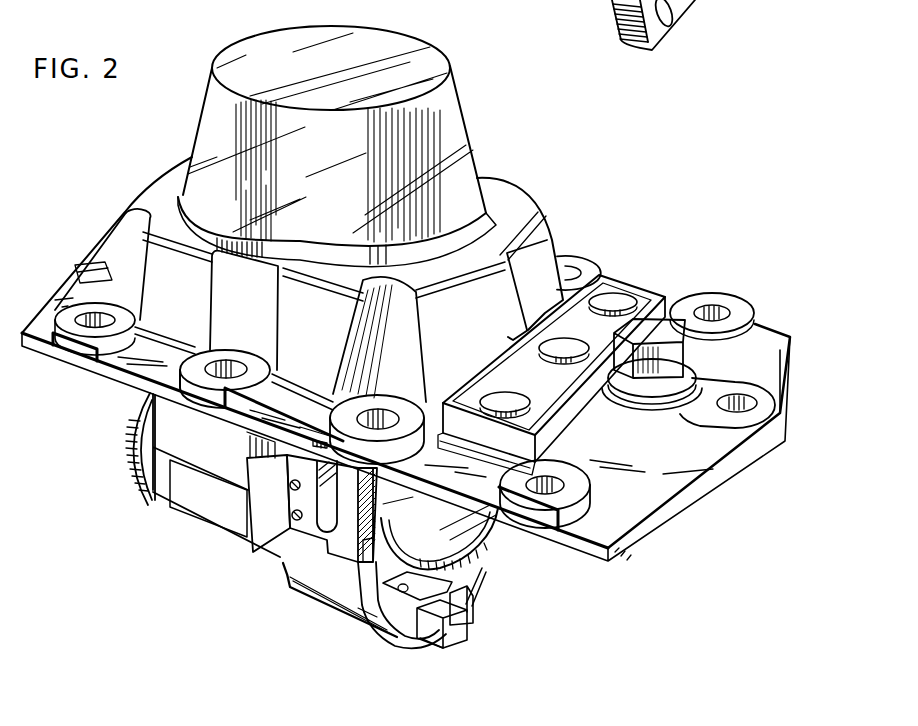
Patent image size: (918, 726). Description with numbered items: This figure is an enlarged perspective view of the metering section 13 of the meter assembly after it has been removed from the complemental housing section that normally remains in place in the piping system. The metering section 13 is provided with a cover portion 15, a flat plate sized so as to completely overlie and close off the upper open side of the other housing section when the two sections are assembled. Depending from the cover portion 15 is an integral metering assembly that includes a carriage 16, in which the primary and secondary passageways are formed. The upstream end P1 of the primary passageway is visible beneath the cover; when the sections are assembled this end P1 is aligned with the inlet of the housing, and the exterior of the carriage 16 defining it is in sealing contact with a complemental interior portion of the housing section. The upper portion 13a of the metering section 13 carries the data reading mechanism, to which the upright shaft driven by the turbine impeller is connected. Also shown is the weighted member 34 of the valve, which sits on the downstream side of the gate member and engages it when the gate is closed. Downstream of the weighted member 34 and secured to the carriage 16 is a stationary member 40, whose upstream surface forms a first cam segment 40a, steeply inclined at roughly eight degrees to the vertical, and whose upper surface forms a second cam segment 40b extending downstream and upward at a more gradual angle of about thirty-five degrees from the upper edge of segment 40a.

The metering section 13 is at (546, 211).
The upper portion of the housing section 13a is at (503, 181).
The cover portion 15 is at (755, 349).
The carriage 16 is at (283, 557).
The weighted member 34 is at (447, 534).
The stationary member 40 is at (446, 647).
The first cam segment 40a is at (471, 618).
The second cam segment 40b is at (448, 594).
The upstream end of the primary passageway P1 is at (127, 448).